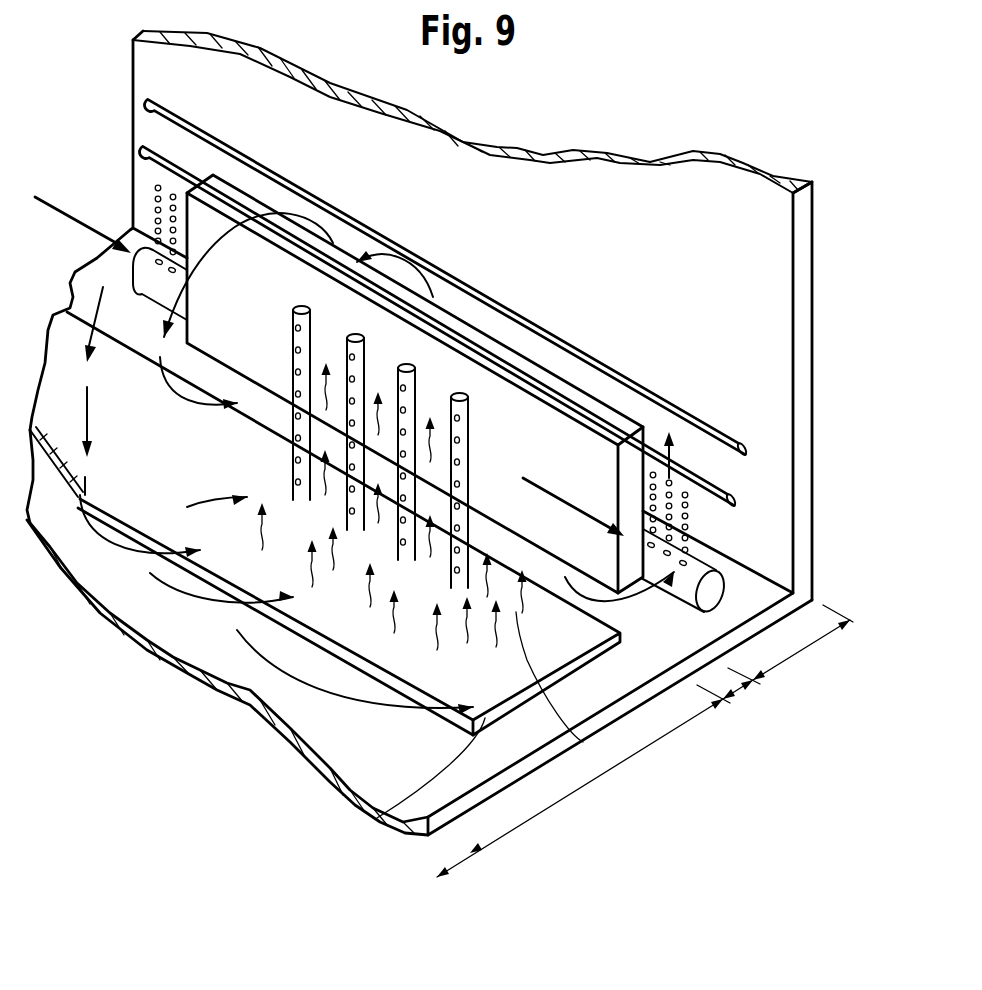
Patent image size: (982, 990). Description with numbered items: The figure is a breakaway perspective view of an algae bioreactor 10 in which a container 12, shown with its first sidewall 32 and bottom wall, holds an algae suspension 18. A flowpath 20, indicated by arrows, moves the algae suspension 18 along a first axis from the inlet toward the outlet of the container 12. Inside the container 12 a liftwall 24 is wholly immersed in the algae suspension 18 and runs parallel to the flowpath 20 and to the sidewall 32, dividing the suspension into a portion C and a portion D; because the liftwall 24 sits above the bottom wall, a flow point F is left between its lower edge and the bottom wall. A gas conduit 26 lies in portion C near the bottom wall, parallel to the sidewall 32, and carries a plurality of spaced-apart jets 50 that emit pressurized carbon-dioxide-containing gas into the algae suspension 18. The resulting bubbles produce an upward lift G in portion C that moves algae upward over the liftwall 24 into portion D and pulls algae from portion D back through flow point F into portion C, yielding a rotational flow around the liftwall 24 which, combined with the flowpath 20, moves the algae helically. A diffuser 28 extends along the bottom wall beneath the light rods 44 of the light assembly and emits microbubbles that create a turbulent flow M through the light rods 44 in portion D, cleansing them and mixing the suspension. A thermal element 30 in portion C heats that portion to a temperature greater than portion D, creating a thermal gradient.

The algae bioreactor 10 is at (715, 130).
The container 12 is at (822, 193).
The algae suspension 18 is at (247, 683).
The flowpath 20 is at (73, 220).
The liftwall 24 is at (645, 405).
The gas conduit 26 is at (708, 570).
The diffuser 28 is at (377, 820).
The thermal element 30 is at (735, 492).
The first sidewall 32 is at (812, 330).
The light rods 44 is at (347, 503).
The jets 50 is at (660, 562).
The lift G is at (516, 347).
The turbulent flow M is at (583, 742).
The portion C is at (788, 658).
The flow point F is at (737, 693).
The portion D is at (620, 760).